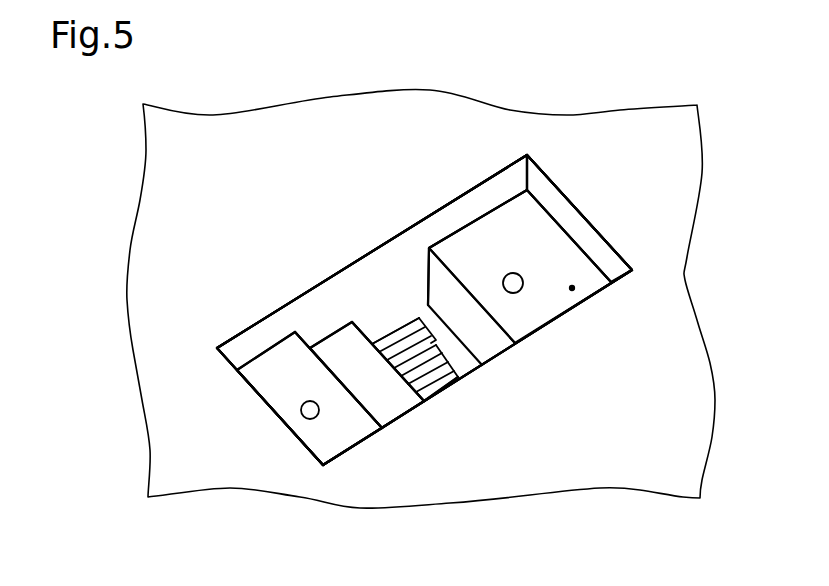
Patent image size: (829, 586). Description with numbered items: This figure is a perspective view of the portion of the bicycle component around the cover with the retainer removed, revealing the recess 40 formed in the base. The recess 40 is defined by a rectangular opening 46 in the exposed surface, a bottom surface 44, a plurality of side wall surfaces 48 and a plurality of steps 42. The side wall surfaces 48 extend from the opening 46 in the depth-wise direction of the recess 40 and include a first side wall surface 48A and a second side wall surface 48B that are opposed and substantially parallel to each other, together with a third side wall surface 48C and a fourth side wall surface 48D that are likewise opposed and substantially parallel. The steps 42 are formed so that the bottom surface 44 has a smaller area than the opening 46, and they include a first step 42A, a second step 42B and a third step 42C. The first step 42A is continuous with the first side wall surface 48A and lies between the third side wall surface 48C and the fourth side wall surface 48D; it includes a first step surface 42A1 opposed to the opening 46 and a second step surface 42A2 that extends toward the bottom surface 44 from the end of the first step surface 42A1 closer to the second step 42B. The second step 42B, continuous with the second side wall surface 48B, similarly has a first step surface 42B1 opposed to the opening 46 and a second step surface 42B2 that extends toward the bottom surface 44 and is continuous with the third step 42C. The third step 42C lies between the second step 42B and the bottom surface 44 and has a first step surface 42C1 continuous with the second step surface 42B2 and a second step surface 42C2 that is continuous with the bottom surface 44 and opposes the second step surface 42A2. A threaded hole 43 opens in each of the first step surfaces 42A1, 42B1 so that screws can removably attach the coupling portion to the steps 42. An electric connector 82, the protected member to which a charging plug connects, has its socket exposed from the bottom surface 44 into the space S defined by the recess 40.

The recess 40 is at (548, 316).
The steps 42 is at (186, 361).
The first step 42A is at (527, 223).
The first step surface 42A1 is at (488, 230).
The second step surface 42A2 is at (445, 282).
The second step 42B is at (263, 380).
The first step surface 42B1 is at (312, 440).
The second step surface 42B2 is at (380, 425).
The third step 42C is at (398, 410).
The first step surface 42C1 is at (417, 405).
The second step surface 42C2 is at (428, 400).
The threaded hole 43 is at (517, 274).
The bottom surface 44 is at (395, 333).
The opening 46 is at (377, 253).
The side wall surfaces 48 is at (200, 441).
The first side wall surface 48A is at (565, 218).
The second side wall surface 48B is at (292, 426).
The third side wall surface 48C is at (312, 308).
The fourth side wall surface 48D is at (505, 350).
The electric connector 82 is at (468, 388).
The space S is at (575, 289).